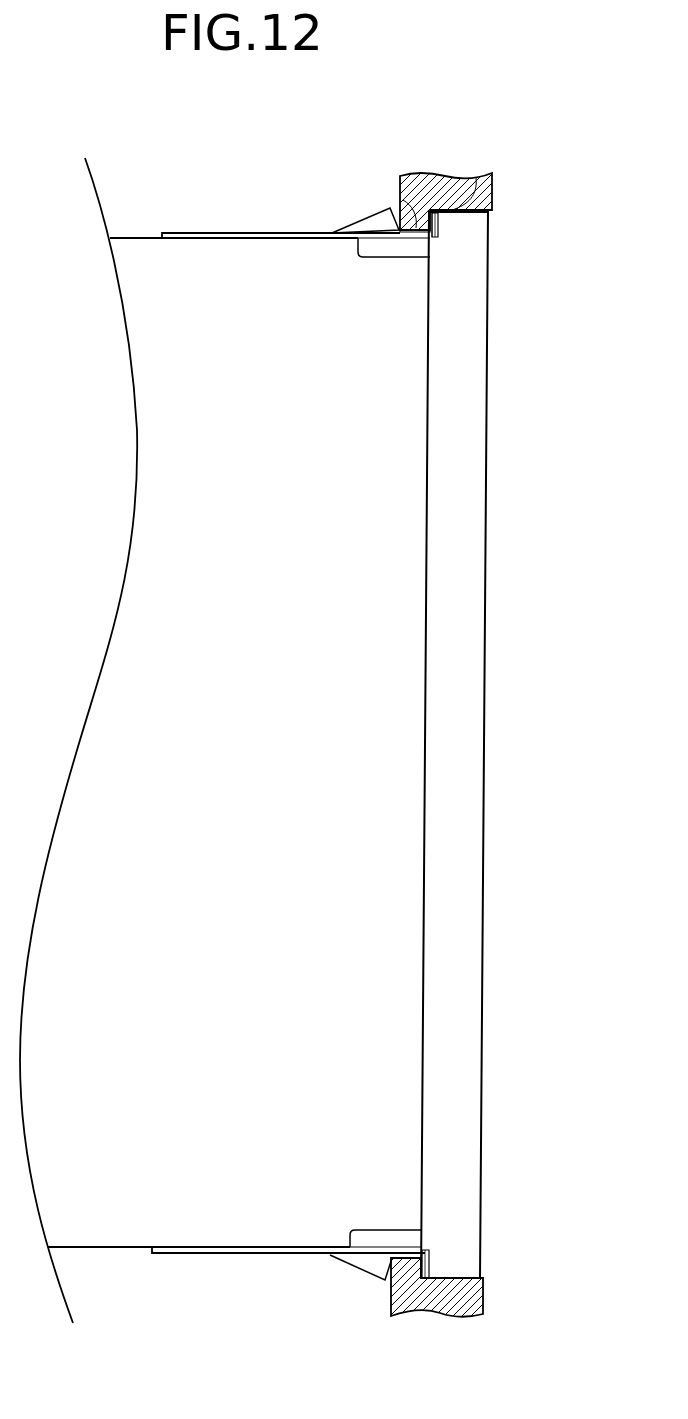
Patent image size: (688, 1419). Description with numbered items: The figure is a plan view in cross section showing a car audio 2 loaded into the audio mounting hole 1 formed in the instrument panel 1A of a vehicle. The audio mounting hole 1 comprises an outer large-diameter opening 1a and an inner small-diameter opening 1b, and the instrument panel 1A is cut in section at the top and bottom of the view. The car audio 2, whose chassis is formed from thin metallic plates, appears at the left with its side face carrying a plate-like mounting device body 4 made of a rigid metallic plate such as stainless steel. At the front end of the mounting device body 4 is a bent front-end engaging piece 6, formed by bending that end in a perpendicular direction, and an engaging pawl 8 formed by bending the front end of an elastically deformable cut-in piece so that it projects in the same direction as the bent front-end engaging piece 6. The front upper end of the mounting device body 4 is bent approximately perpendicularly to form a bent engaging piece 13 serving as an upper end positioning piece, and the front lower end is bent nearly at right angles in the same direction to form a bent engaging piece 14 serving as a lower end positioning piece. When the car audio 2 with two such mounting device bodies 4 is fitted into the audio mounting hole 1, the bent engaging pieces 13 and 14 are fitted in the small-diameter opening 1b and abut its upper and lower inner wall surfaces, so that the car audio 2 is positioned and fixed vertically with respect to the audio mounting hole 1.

The audio mounting hole 1 is at (488, 225).
The instrument panel 1A is at (488, 196).
The outer large-diameter opening 1a is at (476, 178).
The inner small-diameter opening 1b is at (403, 200).
The car audio 2 is at (187, 462).
The mounting device body 4 is at (247, 233).
The bent front-end engaging piece 6 is at (440, 233).
The engaging pawl 8 is at (377, 225).
The bent engaging piece 13 is at (393, 250).
The bent engaging piece 14 is at (386, 1240).